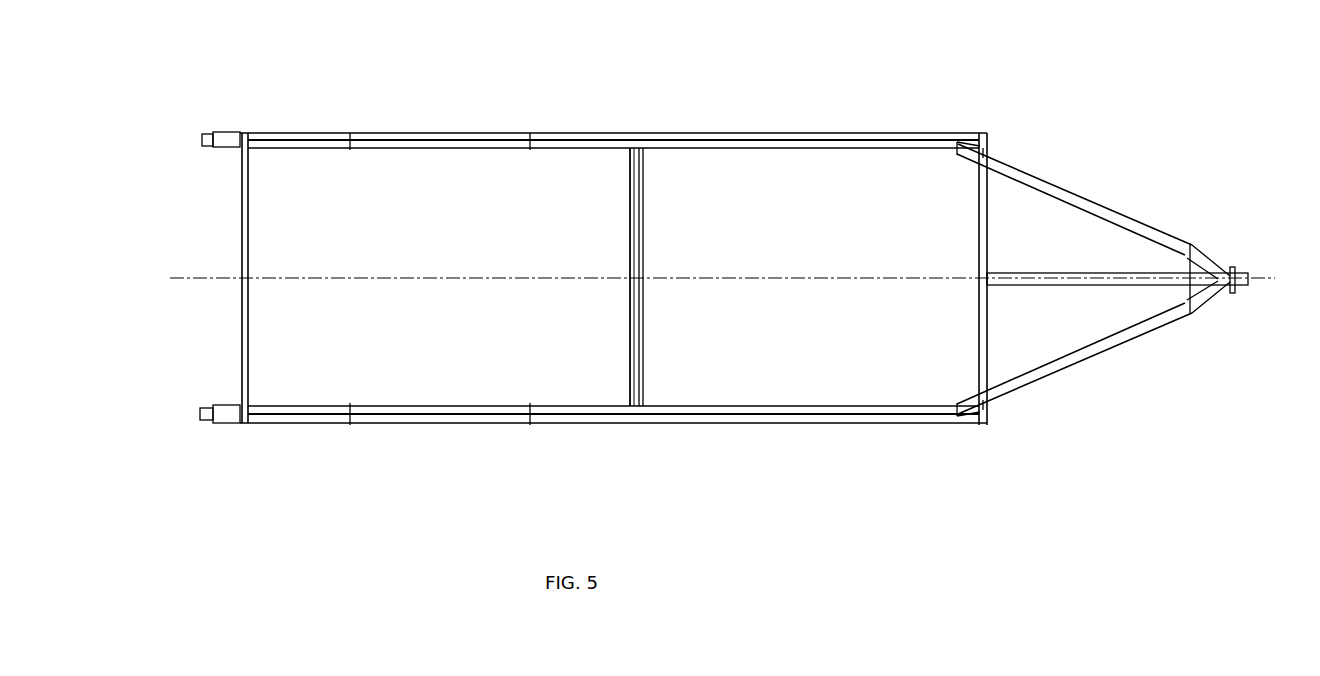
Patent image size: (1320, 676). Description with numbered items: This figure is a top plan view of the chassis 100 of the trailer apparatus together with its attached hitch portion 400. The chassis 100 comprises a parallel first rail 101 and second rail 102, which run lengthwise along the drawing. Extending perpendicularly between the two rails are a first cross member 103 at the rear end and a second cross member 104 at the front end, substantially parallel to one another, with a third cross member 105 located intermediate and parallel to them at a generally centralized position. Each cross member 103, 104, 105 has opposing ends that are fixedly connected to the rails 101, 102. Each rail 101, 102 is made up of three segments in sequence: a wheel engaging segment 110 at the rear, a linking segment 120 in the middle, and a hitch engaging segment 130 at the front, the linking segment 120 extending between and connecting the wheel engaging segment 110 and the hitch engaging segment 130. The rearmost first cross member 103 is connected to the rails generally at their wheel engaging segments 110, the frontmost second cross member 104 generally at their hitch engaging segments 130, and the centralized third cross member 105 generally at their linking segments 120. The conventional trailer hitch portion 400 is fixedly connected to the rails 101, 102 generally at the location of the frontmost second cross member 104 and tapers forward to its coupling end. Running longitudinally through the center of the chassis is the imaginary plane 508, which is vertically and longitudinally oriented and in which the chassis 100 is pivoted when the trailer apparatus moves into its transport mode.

The chassis 100 is at (752, 93).
The first rail 101 is at (422, 425).
The second rail 102 is at (417, 132).
The first cross member 103 is at (243, 188).
The second cross member 104 is at (988, 221).
The third cross member 105 is at (643, 213).
The wheel engaging segment 110 is at (372, 150).
The linking segment 120 is at (579, 150).
The hitch engaging segment 130 is at (803, 150).
The hitch portion 400 is at (1108, 210).
The imaginary plane 508 is at (368, 277).